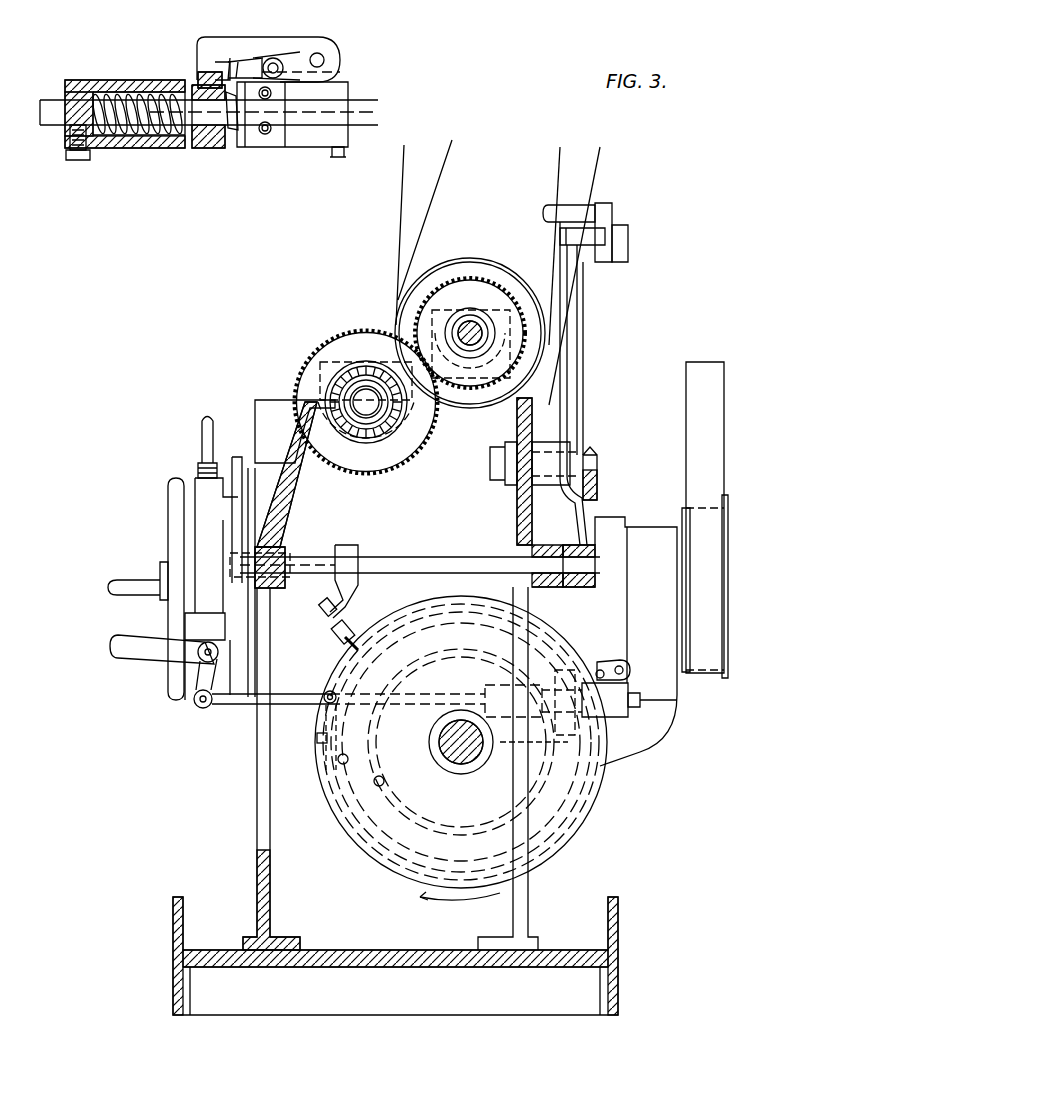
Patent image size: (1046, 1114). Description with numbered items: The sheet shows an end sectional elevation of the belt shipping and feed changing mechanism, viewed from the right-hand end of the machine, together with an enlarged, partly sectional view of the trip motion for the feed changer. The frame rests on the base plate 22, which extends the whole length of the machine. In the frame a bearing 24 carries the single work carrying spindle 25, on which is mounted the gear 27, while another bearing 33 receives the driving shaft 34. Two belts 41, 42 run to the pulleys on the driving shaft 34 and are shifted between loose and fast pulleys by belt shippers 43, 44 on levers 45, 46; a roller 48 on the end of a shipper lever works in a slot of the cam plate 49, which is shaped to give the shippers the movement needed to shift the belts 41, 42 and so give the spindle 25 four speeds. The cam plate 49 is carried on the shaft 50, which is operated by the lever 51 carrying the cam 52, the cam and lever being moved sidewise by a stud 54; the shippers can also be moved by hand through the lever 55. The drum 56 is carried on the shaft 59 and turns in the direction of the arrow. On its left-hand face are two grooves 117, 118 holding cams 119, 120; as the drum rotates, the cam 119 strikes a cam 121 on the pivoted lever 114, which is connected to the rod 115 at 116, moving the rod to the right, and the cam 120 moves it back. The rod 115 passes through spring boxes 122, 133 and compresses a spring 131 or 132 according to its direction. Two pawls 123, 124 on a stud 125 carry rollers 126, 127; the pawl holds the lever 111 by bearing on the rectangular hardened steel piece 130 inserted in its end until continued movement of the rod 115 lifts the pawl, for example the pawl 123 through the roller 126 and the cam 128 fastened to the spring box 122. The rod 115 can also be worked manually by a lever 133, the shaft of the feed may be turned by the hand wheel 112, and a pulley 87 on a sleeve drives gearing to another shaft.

In FIG. 3, the base plate 22 is at (183, 941).
In FIG. 3, the bearing 24 is at (320, 368).
In FIG. 3, the work carrying spindle 25 is at (356, 384).
In FIG. 3, the gear 27 is at (358, 330).
In FIG. 3, the bearing 33 is at (496, 308).
In FIG. 3, the driving shaft 34 is at (470, 320).
In FIG. 3, the belt 41 is at (557, 159).
In FIG. 3, the belt 42 is at (598, 172).
In FIG. 3, the belt shipper 43 is at (545, 208).
In FIG. 3, the belt shipper 44 is at (560, 236).
In FIG. 3, the lever 45 is at (592, 290).
In FIG. 3, the lever 46 is at (598, 330).
In FIG. 3, the roller 48 is at (598, 471).
In FIG. 3, the cam plate 49 is at (596, 550).
In FIG. 3, the shaft 50 is at (432, 572).
In FIG. 3, the lever 51 is at (352, 595).
In FIG. 3, the cam 52 is at (322, 620).
In FIG. 3, the stud 54 is at (336, 635).
In FIG. 3, the lever 55 is at (238, 462).
In FIG. 3, the drum 56 is at (460, 880).
In FIG. 3, the shaft 59 is at (480, 758).
In FIG. 3, the pulley 87 is at (722, 678).
In FIG. 4, the lever 111 is at (206, 140).
In FIG. 3, the lever 111 is at (560, 705).
In FIG. 3, the hand wheel 112 is at (168, 517).
In FIG. 3, the lever 114 is at (330, 713).
In FIG. 4, the rod 115 is at (378, 108).
In FIG. 3, the rod 115 is at (280, 700).
In FIG. 3, the connection point 116 is at (328, 692).
In FIG. 3, the groove 117 is at (410, 818).
In FIG. 3, the groove 118 is at (376, 875).
In FIG. 3, the cam 119 is at (317, 738).
In FIG. 3, the cam 120 is at (374, 783).
In FIG. 3, the cam 121 is at (338, 761).
In FIG. 4, the spring box 122 is at (348, 137).
In FIG. 3, the spring box 122 is at (622, 712).
In FIG. 4, the pawl 123 is at (232, 60).
In FIG. 3, the pawl 123 is at (598, 668).
In FIG. 4, the pawl 124 is at (233, 44).
In FIG. 3, the pawl 124 is at (615, 665).
In FIG. 4, the stud 125 is at (346, 70).
In FIG. 3, the stud 125 is at (630, 669).
In FIG. 4, the roller 126 is at (290, 58).
In FIG. 4, the roller 127 is at (275, 58).
In FIG. 4, the cam 128 is at (325, 58).
In FIG. 4, the hardened steel piece 130 is at (198, 78).
In FIG. 4, the spring 131 is at (233, 130).
In FIG. 4, the spring 132 is at (160, 128).
In FIG. 4, the spring box; lever 133 is at (66, 136).
In FIG. 3, the spring box; lever 133 is at (160, 652).